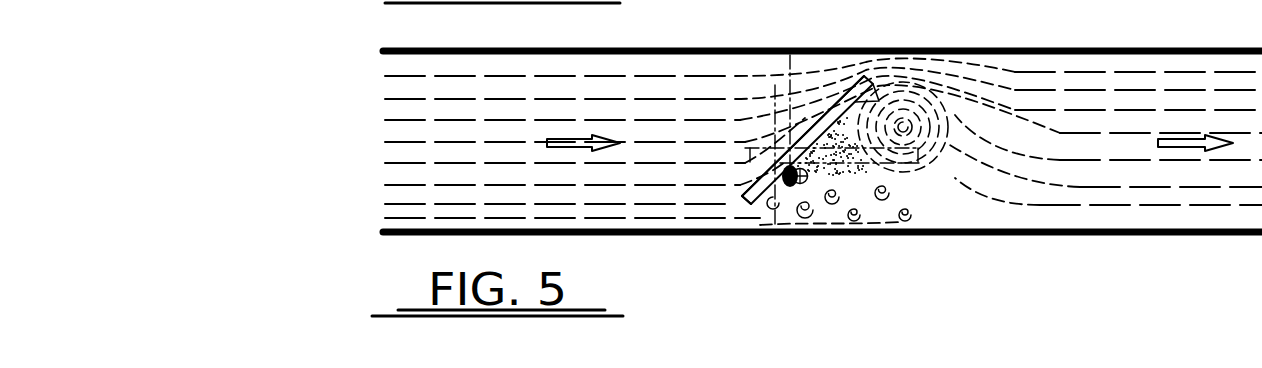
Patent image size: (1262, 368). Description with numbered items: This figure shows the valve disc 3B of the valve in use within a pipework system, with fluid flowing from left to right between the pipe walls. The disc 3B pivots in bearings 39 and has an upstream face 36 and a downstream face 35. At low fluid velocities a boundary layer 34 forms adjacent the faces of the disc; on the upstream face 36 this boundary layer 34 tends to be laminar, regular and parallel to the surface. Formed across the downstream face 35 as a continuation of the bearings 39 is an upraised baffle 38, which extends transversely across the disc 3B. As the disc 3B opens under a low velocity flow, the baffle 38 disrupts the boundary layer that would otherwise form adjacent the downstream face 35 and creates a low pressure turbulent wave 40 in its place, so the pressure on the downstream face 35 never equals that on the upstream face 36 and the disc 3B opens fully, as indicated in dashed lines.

The boundary layer 34 is at (820, 120).
The upstream face 36 is at (810, 130).
The downstream face 35 is at (880, 100).
The baffle 38 is at (788, 180).
The bearings 39 is at (802, 182).
The low pressure turbulent wave 40 is at (847, 113).
The valve disc 3B is at (746, 188).